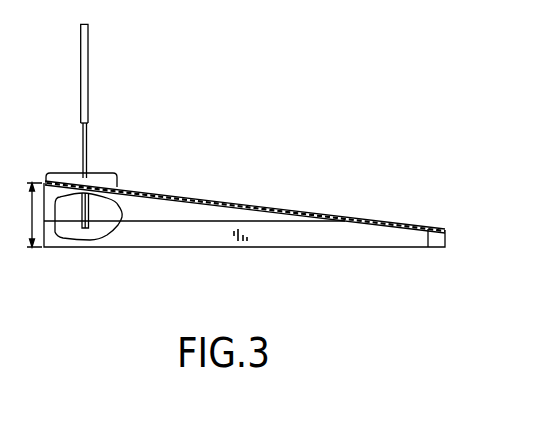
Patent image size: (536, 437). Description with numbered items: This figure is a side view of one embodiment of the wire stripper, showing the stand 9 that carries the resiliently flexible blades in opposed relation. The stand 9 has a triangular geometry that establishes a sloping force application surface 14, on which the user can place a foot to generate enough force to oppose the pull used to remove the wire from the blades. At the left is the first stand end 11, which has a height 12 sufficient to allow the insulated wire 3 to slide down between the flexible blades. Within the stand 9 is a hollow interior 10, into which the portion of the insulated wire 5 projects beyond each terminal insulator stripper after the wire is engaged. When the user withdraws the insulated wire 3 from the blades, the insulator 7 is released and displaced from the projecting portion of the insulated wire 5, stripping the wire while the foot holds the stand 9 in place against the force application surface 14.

The insulated wire 3 is at (88, 101).
The portion of the insulated wire 5 is at (90, 215).
The insulator 7 is at (80, 215).
The stand 9 is at (446, 238).
The hollow interior 10 is at (100, 228).
The first stand end 11 is at (46, 182).
The height 12 is at (33, 215).
The force application surface 14 is at (307, 212).